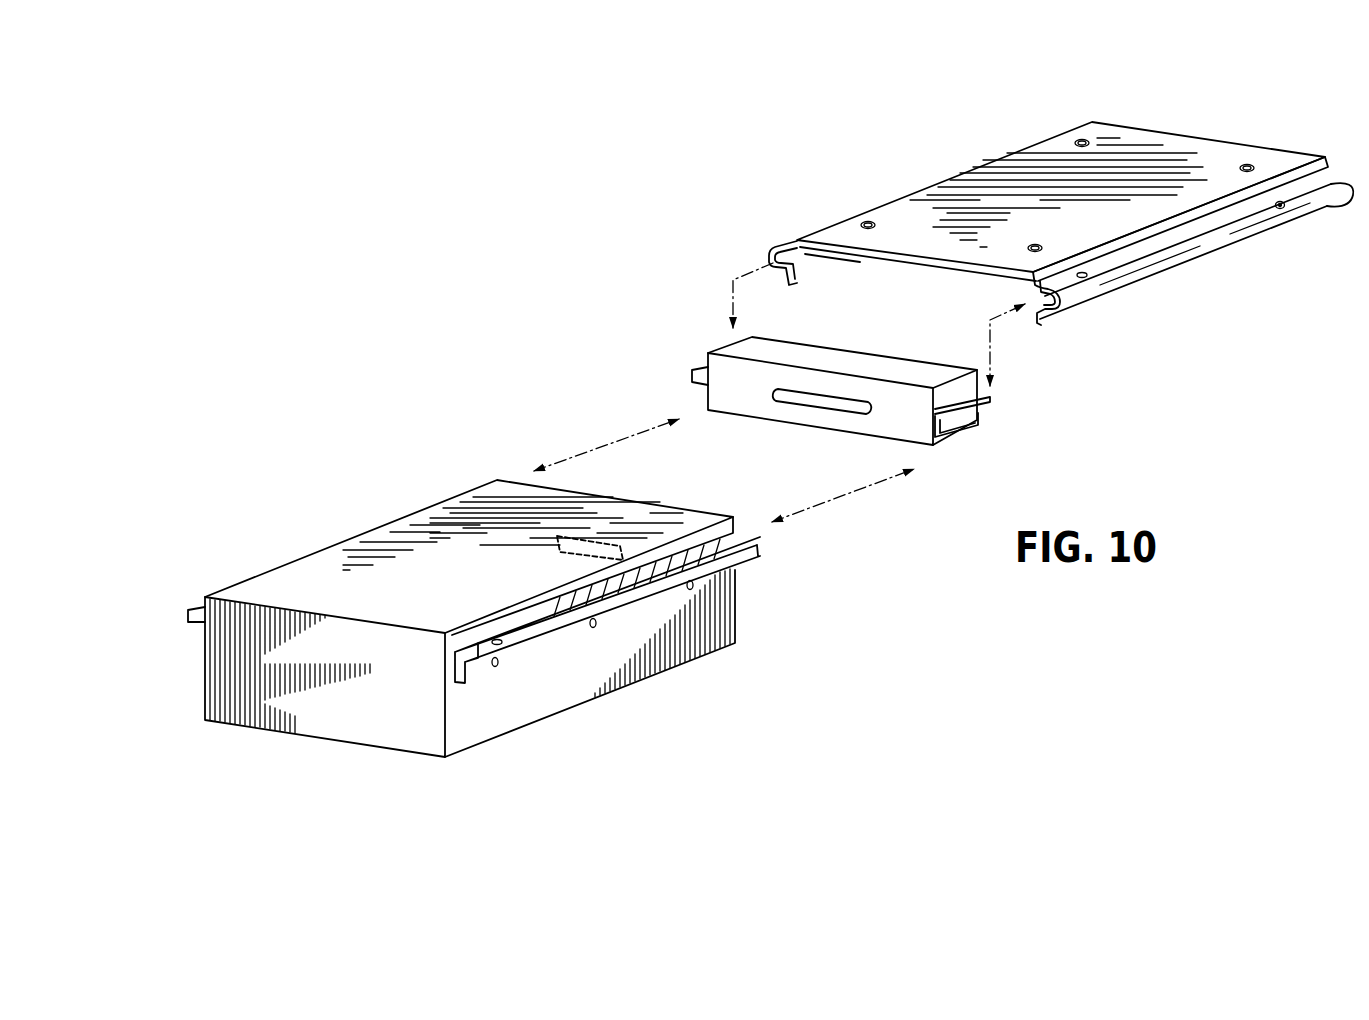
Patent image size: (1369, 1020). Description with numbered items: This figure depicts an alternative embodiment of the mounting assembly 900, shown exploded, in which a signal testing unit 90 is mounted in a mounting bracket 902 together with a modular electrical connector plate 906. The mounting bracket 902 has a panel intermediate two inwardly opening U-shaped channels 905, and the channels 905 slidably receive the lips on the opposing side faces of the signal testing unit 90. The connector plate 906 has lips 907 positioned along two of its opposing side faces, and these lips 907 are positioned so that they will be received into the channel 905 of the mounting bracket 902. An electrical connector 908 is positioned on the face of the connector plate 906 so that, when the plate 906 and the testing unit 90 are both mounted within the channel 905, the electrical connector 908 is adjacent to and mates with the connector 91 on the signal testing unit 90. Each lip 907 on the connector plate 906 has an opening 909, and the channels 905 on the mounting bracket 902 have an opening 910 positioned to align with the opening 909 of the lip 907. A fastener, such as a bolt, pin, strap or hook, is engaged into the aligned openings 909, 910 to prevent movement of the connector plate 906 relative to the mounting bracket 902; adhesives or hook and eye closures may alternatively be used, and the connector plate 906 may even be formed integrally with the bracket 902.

The mounting assembly 900 is at (631, 198).
The signal testing unit 90 is at (473, 577).
The connector 91 is at (567, 526).
The mounting bracket 902 is at (1049, 217).
The U-shaped channel 905 is at (806, 270).
The modular electrical connector plate 906 is at (888, 398).
The lip 907 is at (990, 419).
The electrical connector 908 is at (821, 418).
The opening 909 is at (985, 403).
The opening 910 is at (1294, 218).